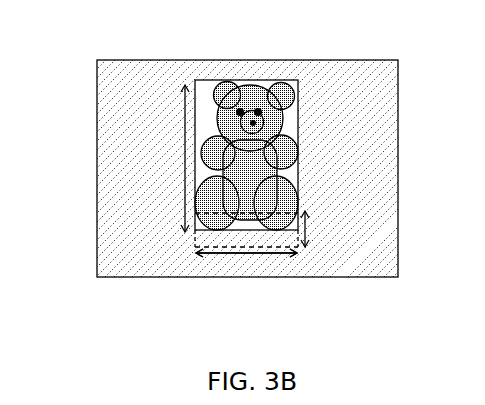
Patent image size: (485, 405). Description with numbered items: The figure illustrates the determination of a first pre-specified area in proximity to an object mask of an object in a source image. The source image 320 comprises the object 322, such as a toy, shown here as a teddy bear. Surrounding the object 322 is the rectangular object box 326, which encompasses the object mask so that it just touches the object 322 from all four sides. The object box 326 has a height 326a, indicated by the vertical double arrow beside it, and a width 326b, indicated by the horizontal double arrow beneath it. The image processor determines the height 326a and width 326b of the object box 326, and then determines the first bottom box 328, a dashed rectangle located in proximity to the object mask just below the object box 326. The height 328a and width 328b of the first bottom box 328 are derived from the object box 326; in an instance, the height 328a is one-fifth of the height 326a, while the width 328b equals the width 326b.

The source image 320 is at (287, 60).
The object 322 is at (234, 83).
The object box 326 is at (298, 104).
The height of the object box 326a is at (185, 187).
The width of the object box 326b is at (257, 254).
The first bottom box 328 is at (197, 247).
The height of the first bottom box 328a is at (310, 228).
The width of the first bottom box 328b is at (240, 254).